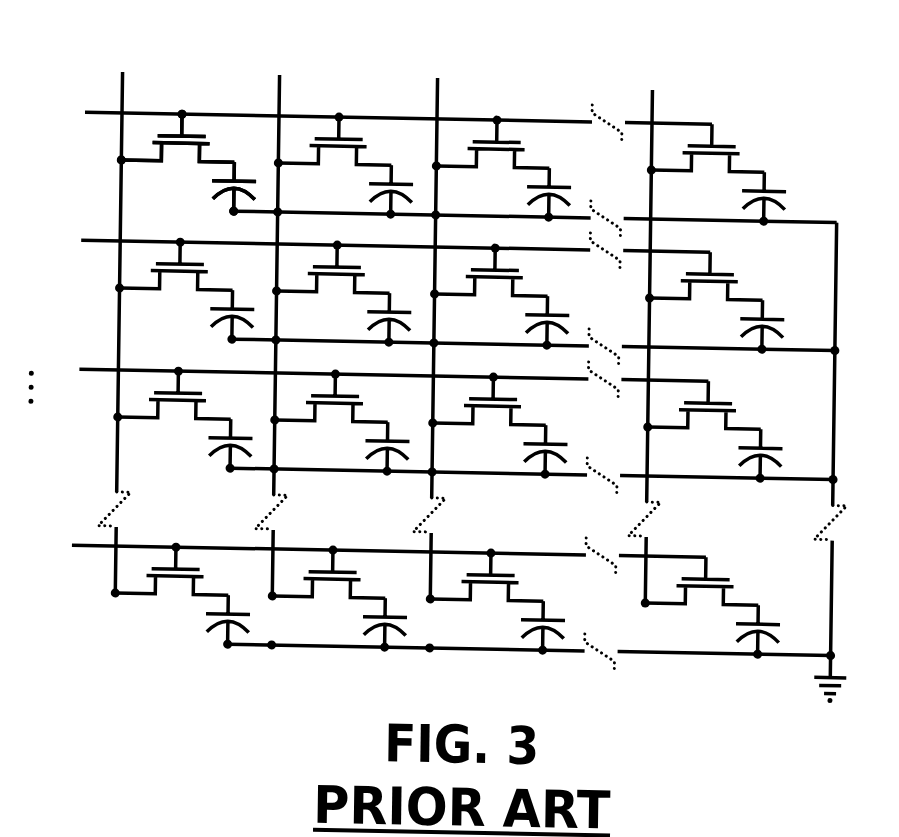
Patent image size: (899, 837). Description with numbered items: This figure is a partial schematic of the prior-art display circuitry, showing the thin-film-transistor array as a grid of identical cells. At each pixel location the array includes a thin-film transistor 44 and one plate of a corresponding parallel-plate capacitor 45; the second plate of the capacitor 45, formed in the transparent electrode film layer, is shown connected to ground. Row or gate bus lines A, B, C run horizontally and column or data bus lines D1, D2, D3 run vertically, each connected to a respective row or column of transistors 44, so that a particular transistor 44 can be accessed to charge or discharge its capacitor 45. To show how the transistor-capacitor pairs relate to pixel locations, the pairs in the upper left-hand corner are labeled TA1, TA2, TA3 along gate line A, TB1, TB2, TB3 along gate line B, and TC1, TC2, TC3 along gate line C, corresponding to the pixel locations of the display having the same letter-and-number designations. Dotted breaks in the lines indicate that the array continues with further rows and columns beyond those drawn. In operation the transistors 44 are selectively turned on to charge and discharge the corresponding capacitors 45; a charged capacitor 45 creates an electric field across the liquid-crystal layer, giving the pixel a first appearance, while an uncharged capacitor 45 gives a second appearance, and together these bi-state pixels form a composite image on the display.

The thin-film transistor 44 is at (197, 135).
The parallel-plate capacitor 45 is at (235, 180).
The row or gate bus line A is at (107, 112).
The row or gate bus line B is at (107, 241).
The row or gate bus line C is at (107, 370).
The column or data bus line D1 is at (122, 85).
The column or data bus line D2 is at (279, 85).
The column or data bus line D3 is at (437, 85).
The transistor-capacitor pair TA1 is at (186, 162).
The transistor-capacitor pair TA2 is at (343, 165).
The transistor-capacitor pair TA3 is at (501, 168).
The transistor-capacitor pair TB1 is at (184, 290).
The transistor-capacitor pair TB2 is at (341, 293).
The transistor-capacitor pair TB3 is at (499, 296).
The transistor-capacitor pair TC1 is at (182, 419).
The transistor-capacitor pair TC2 is at (339, 422).
The transistor-capacitor pair TC3 is at (497, 425).